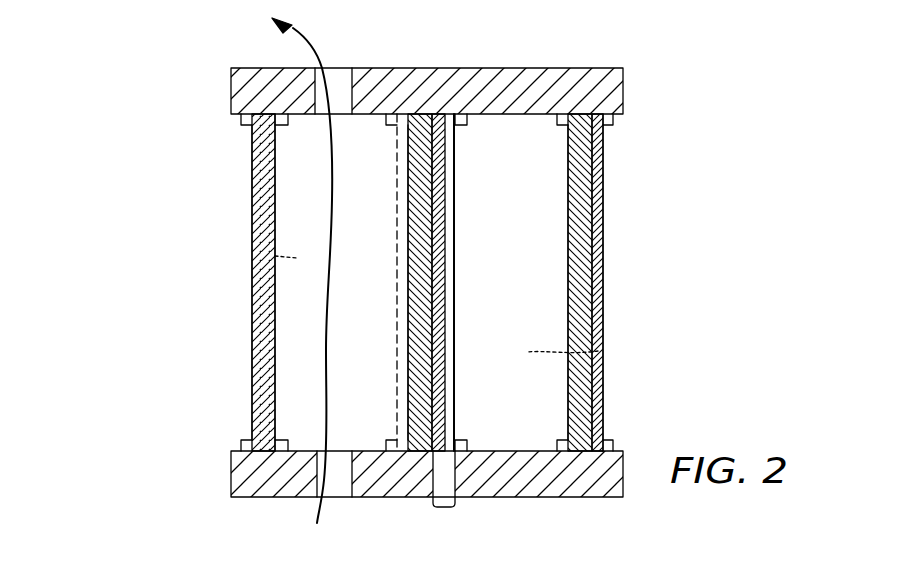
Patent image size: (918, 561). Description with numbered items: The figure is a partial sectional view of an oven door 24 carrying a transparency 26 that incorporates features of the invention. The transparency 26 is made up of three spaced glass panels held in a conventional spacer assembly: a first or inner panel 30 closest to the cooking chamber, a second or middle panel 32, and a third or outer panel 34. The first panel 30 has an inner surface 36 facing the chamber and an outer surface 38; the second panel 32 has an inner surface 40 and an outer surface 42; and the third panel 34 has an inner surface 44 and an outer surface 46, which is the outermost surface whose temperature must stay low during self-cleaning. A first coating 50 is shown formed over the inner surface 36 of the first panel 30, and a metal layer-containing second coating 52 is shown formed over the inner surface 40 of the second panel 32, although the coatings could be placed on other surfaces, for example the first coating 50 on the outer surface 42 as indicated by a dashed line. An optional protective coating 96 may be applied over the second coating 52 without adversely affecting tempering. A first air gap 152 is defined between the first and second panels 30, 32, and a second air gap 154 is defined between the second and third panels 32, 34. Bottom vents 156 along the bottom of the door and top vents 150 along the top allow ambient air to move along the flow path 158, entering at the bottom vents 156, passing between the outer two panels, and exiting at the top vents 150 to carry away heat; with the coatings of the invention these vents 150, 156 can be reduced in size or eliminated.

The oven door 24 is at (500, 78).
The transparency 26 is at (128, 144).
The first panel 30 is at (575, 250).
The second panel 32 is at (410, 272).
The third panel 34 is at (252, 170).
The inner surface 36 is at (598, 172).
The outer surface 38 is at (568, 208).
The inner surface 40 is at (436, 310).
The outer surface 42 is at (408, 322).
The inner surface 44 is at (280, 382).
The outer surface 46 is at (252, 313).
The first coating 50 is at (605, 290).
The second coating 52 is at (444, 508).
The protective coating 96 is at (455, 190).
The top vents 150 is at (340, 68).
The first air gap 152 is at (600, 350).
The second air gap 154 is at (275, 256).
The bottom vents 156 is at (338, 492).
The flow path 158 is at (332, 190).